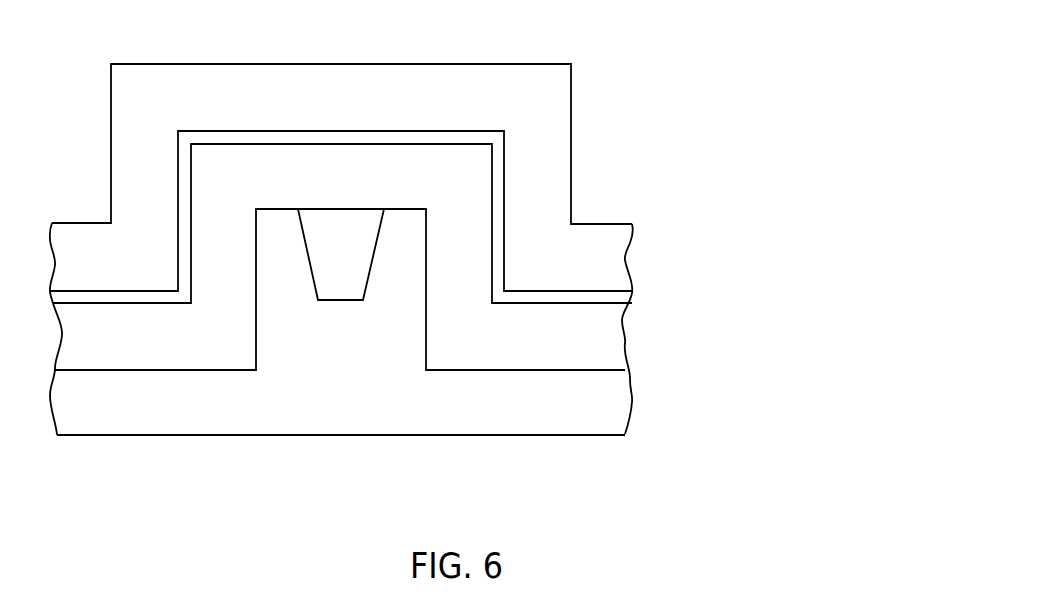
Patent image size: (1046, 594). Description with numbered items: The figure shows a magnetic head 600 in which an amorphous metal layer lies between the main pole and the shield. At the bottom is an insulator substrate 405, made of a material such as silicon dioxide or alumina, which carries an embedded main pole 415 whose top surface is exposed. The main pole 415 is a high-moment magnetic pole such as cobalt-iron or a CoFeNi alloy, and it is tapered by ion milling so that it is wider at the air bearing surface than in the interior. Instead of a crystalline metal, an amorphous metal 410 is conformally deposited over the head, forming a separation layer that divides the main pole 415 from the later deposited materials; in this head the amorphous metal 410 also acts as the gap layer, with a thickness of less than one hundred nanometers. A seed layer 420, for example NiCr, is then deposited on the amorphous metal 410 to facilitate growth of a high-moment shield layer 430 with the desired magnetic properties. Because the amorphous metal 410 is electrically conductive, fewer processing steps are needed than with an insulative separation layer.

The magnetic head 600 is at (633, 122).
The shield layer 430 is at (632, 245).
The seed layer 420 is at (632, 298).
The amorphous metal layer 410 is at (622, 343).
The insulator substrate 405 is at (632, 402).
The main pole 415 is at (339, 300).